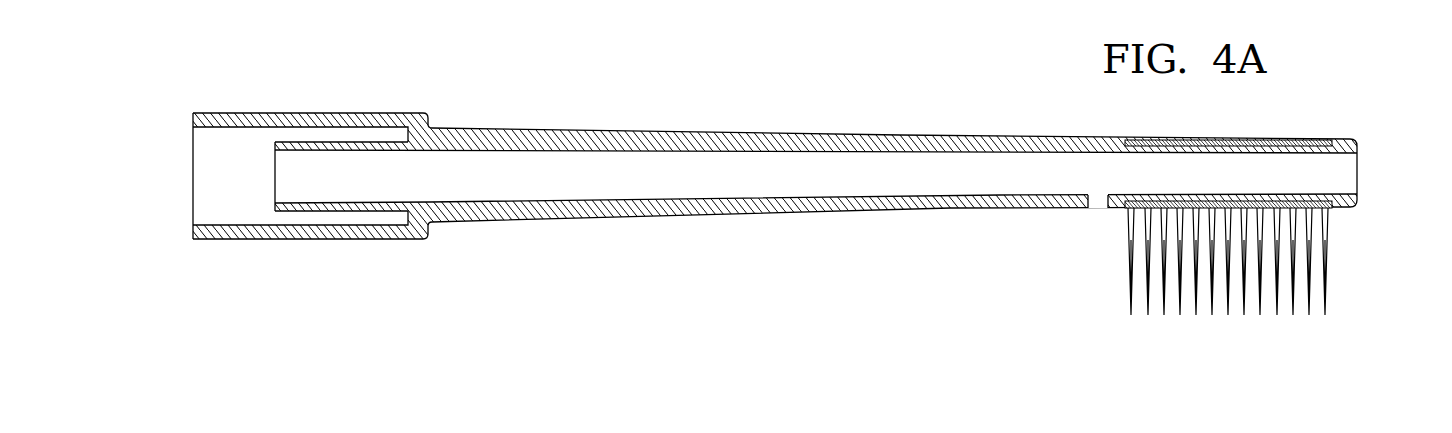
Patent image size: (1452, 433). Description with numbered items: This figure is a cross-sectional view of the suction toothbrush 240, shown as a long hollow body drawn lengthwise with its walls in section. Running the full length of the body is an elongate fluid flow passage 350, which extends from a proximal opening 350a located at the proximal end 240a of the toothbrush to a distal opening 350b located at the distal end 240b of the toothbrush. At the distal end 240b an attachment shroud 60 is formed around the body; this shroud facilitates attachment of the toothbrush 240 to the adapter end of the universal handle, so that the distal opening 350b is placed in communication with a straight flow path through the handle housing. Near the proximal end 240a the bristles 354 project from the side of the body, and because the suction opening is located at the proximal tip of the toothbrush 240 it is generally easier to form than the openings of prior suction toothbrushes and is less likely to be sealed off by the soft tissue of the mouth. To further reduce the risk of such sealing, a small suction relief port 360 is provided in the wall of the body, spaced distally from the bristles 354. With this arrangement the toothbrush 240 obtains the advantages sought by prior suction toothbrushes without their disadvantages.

The attachment shroud 60 is at (358, 118).
The toothbrush 240 is at (845, 133).
The proximal end 240a is at (1351, 139).
The distal end 240b is at (425, 135).
The elongate fluid flow passage 350 is at (593, 175).
The proximal opening 350a is at (1342, 173).
The distal opening 350b is at (290, 170).
The bristles 354 is at (1323, 285).
The suction relief port 360 is at (1098, 206).